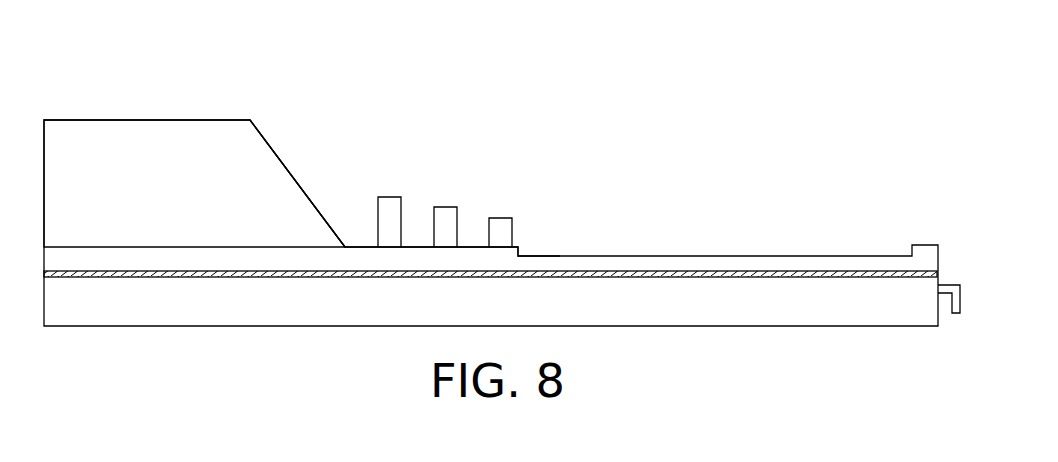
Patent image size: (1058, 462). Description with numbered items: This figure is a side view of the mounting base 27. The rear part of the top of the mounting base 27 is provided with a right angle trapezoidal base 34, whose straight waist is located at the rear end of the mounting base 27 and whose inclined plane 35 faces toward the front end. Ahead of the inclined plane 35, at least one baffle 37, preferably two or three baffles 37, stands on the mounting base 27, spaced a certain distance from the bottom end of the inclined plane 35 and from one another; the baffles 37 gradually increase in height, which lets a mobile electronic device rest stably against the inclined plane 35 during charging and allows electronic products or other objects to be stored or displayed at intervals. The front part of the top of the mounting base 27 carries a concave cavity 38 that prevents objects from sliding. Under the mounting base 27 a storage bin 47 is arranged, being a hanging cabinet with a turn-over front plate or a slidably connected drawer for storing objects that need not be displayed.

The mounting base 27 is at (697, 266).
The right angle trapezoidal base 34 is at (113, 163).
The inclined plane 35 is at (280, 158).
The baffle 37 is at (390, 212).
The concave cavity 38 is at (523, 252).
The storage bin 47 is at (777, 308).